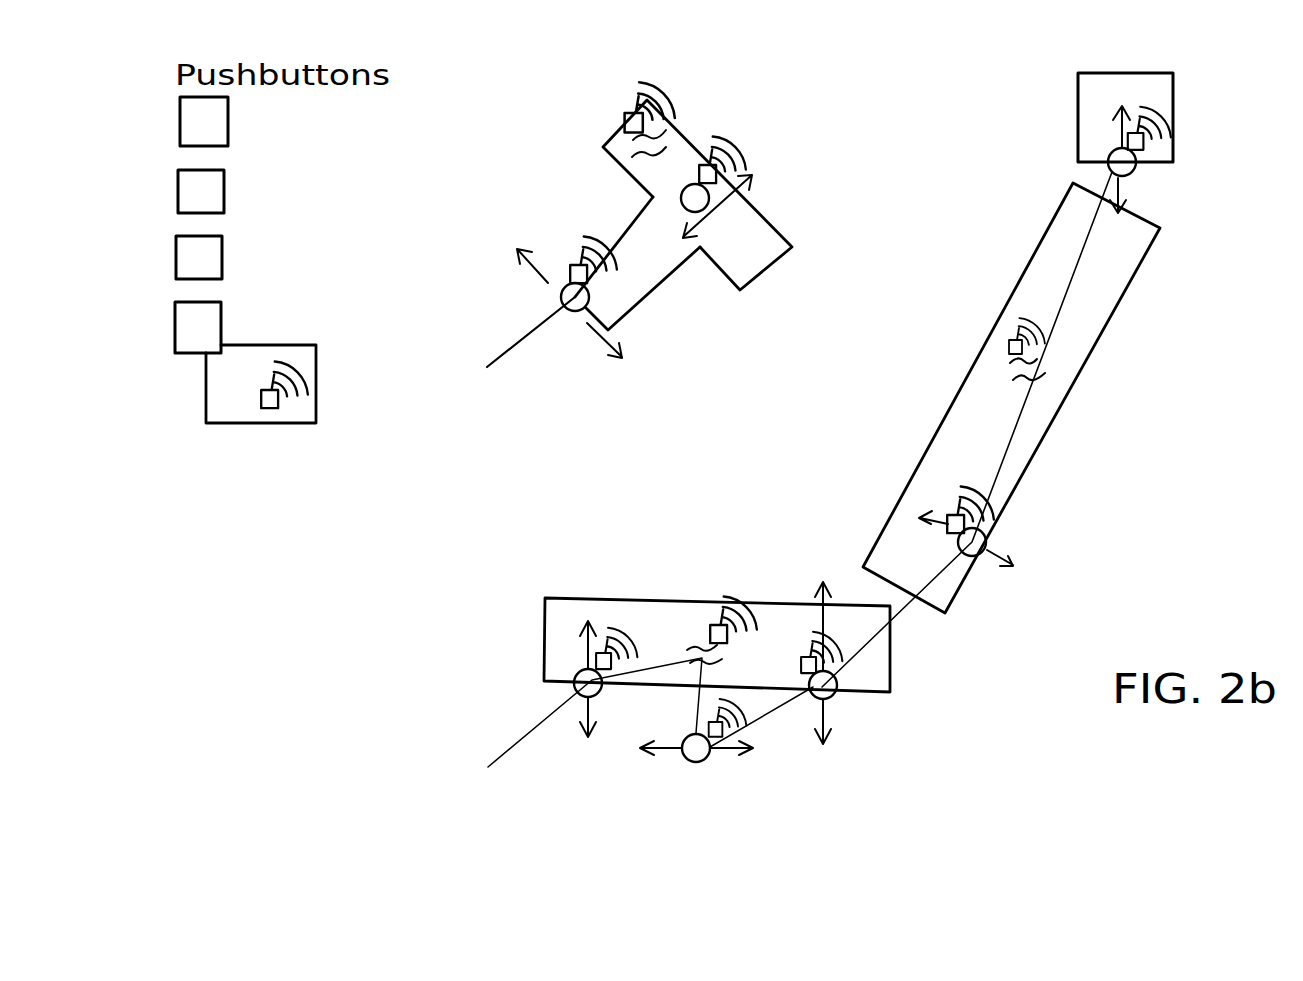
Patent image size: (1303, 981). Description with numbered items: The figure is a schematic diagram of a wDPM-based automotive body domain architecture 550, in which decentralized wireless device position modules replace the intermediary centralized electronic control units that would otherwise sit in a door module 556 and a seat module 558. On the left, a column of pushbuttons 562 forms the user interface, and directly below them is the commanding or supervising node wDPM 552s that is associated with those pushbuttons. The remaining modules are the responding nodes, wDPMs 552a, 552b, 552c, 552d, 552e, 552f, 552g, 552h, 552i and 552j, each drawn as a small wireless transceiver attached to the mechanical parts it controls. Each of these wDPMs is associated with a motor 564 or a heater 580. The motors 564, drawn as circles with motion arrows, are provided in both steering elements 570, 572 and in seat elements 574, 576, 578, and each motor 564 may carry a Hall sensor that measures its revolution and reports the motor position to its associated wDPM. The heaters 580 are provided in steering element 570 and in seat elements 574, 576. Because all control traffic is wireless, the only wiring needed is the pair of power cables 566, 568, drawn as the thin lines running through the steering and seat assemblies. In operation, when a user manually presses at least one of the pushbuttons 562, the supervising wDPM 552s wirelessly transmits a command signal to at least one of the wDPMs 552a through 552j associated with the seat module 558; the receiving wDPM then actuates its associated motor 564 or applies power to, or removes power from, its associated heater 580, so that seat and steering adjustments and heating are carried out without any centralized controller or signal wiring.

The wDPM-based automotive body domain architecture 550 is at (310, 707).
The door module 556 is at (242, 588).
The seat module 558 is at (468, 568).
The pushbuttons 562 is at (215, 120).
The commanding or supervising node wDPM 552s is at (248, 423).
The wDPM 552a is at (627, 637).
The wDPM 552b is at (737, 702).
The wDPM 552c is at (730, 603).
The wDPM 552d is at (820, 648).
The wDPM 552e is at (947, 514).
The wDPM 552f is at (1007, 347).
The wDPM 552g is at (1145, 142).
The wDPM 552h is at (570, 262).
The wDPM 552i is at (705, 163).
The wDPM 552j is at (630, 112).
The motor 564 is at (681, 200).
The power cable 566 is at (500, 368).
The power cable 568 is at (1077, 272).
The steering element 570 is at (780, 233).
The steering element 572 is at (652, 295).
The seat element 574 is at (892, 673).
The seat element 576 is at (1040, 450).
The seat element 578 is at (1174, 96).
The heater 580 is at (607, 143).